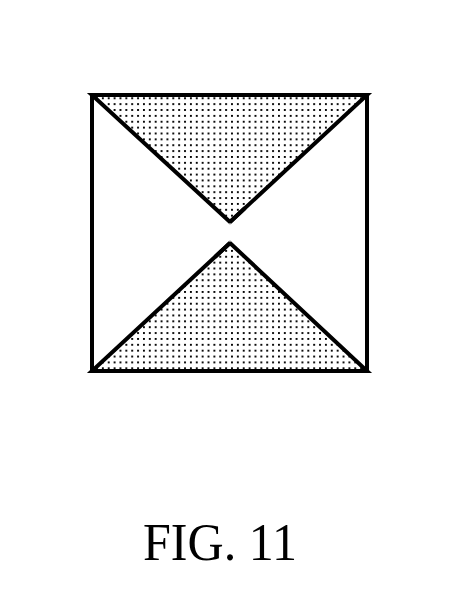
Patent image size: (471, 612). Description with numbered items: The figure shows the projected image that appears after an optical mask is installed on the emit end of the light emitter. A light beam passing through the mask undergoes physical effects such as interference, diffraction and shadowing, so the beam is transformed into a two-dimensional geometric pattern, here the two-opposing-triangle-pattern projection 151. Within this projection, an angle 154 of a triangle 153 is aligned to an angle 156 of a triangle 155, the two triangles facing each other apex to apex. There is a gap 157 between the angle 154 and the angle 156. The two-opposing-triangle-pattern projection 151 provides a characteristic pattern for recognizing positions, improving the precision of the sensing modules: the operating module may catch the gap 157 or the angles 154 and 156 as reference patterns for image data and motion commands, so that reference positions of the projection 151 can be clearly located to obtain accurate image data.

The two-opposing-triangle-pattern projection 151 is at (127, 35).
The triangle 153 is at (253, 154).
The angle 154 is at (230, 208).
The triangle 155 is at (254, 336).
The angle 156 is at (228, 258).
The gap 157 is at (229, 233).